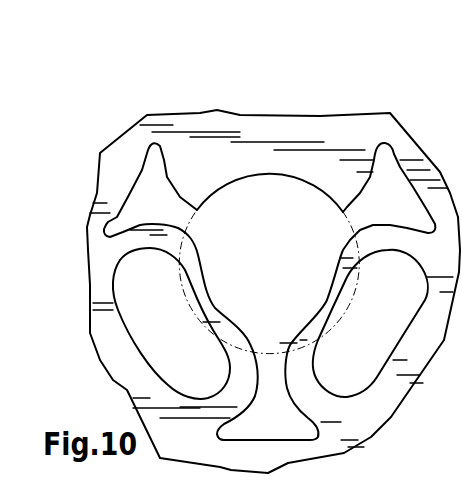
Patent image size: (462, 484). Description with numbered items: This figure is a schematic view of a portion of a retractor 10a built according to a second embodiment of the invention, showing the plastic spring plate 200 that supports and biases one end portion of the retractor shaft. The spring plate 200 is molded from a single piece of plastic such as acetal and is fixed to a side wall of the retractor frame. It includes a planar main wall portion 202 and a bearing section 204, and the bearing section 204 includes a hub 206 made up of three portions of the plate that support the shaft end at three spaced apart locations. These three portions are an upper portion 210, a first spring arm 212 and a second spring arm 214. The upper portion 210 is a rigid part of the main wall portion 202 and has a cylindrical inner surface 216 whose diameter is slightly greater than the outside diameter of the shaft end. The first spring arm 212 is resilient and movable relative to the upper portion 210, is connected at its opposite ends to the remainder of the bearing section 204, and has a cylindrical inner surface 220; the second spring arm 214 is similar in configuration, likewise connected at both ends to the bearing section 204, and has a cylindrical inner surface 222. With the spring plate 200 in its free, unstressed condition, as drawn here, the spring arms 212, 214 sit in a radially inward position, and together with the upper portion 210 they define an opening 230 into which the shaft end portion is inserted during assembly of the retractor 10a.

The retractor 10a is at (94, 171).
The spring plate 200 is at (87, 229).
The main wall portion 202 is at (105, 249).
The bearing section 204 is at (113, 340).
The hub 206 is at (178, 317).
The upper portion 210 is at (298, 180).
The first spring arm 212 is at (208, 327).
The second spring arm 214 is at (347, 297).
The cylindrical inner surface 216 is at (233, 182).
The cylindrical inner surface 220 is at (207, 286).
The cylindrical inner surface 222 is at (324, 306).
The opening 230 is at (264, 194).